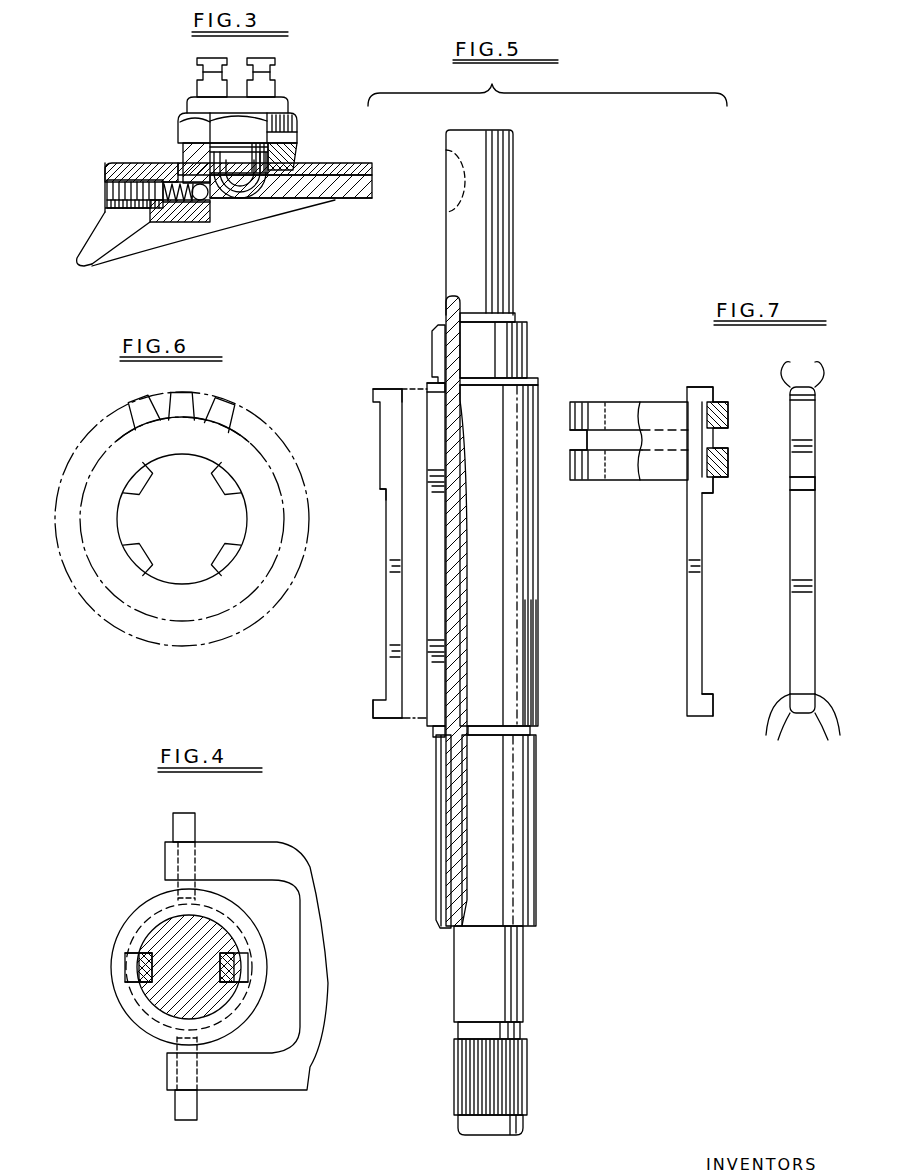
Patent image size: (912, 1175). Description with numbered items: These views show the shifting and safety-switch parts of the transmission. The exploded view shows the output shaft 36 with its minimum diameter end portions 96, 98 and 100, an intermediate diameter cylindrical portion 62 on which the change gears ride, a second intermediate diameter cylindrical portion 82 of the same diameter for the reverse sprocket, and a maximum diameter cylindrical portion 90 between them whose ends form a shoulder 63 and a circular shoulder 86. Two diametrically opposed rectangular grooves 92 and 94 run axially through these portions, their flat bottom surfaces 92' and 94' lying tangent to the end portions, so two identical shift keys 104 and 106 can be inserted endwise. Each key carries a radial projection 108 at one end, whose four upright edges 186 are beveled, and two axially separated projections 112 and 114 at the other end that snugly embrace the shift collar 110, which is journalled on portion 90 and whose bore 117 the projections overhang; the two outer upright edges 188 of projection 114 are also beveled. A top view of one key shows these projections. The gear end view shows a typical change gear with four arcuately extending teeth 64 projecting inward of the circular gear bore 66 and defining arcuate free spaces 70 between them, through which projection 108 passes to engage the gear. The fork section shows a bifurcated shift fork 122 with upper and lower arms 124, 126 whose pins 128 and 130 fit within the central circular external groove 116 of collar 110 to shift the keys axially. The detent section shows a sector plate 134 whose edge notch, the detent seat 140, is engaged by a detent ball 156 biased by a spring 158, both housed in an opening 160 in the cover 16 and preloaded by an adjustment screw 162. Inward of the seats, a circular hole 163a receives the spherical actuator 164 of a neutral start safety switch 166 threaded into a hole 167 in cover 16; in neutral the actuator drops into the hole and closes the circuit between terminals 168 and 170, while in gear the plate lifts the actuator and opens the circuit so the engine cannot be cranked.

In FIG. 3, the cover 16 is at (87, 242).
In FIG. 5, the output shaft 36 is at (445, 275).
In FIG. 5, the intermediate diameter cylindrical portion 62 is at (432, 888).
In FIG. 5, the shoulder 63 is at (427, 736).
In FIG. 6, the arcuately extending teeth 64 is at (222, 477).
In FIG. 6, the circular gear bore 66 is at (243, 523).
In FIG. 6, the arcuate free spaces 70 is at (182, 462).
In FIG. 5, the intermediate diameter cylindrical portion 82 is at (430, 340).
In FIG. 5, the circular shoulder 86 is at (428, 380).
In FIG. 5, the maximum diameter cylindrical portion 90 is at (427, 388).
In FIG. 4, the maximum diameter cylindrical portion 90 is at (160, 1008).
In FIG. 5, the rectangular groove 92 is at (394, 582).
In FIG. 5, the flat bottom surface 92' is at (409, 611).
In FIG. 4, the flat bottom surface 92' is at (97, 949).
In FIG. 5, the rectangular groove 94 is at (529, 555).
In FIG. 5, the flat bottom surface 94' is at (567, 662).
In FIG. 4, the flat bottom surface 94' is at (256, 997).
In FIG. 5, the minimum diameter cylindrical end portion 96 is at (512, 1006).
In FIG. 5, the minimum diameter cylindrical end portion 98 is at (512, 1088).
In FIG. 5, the minimum diameter cylindrical end portion 100 is at (515, 266).
In FIG. 5, the shift key 104 is at (384, 622).
In FIG. 4, the shift key 104 is at (123, 968).
In FIG. 4, the shift key 106 is at (253, 961).
In FIG. 7, the shift key 106 is at (789, 527).
In FIG. 5, the radial projection 108 is at (372, 712).
In FIG. 7, the radial projection 108 is at (802, 693).
In FIG. 4, the shift collar 110 is at (112, 934).
In FIG. 7, the shift collar 110 is at (609, 401).
In FIG. 5, the projection 112 is at (378, 487).
In FIG. 4, the projection 112 is at (135, 980).
In FIG. 7, the projection 112 is at (716, 487).
In FIG. 5, the projection 114 is at (372, 394).
In FIG. 7, the projection 114 is at (715, 393).
In FIG. 4, the central circular external groove 116 is at (142, 912).
In FIG. 7, the central circular external groove 116 is at (586, 446).
In FIG. 7, the bore 117 is at (703, 410).
In FIG. 4, the bifurcated shift fork 122 is at (305, 868).
In FIG. 4, the upper arm 124 is at (260, 842).
In FIG. 4, the lower arm 126 is at (250, 1090).
In FIG. 4, the pin 128 is at (175, 827).
In FIG. 4, the pin 130 is at (174, 1105).
In FIG. 3, the sector plate 134 is at (330, 201).
In FIG. 3, the detent seat 140 is at (200, 215).
In FIG. 3, the detent ball 156 is at (198, 186).
In FIG. 3, the spring 158 is at (167, 203).
In FIG. 3, the opening 160 is at (128, 182).
In FIG. 3, the adjustment screw 162 is at (112, 190).
In FIG. 3, the circular hole 163a is at (245, 202).
In FIG. 3, the actuator 164 is at (295, 172).
In FIG. 3, the neutral start safety switch 166 is at (293, 97).
In FIG. 3, the hole 167 is at (252, 153).
In FIG. 3, the terminal 168 is at (200, 72).
In FIG. 3, the terminal 170 is at (273, 72).
In FIG. 7, the upright edges 186 is at (706, 716).
In FIG. 7, the outer upright edges 188 is at (700, 384).